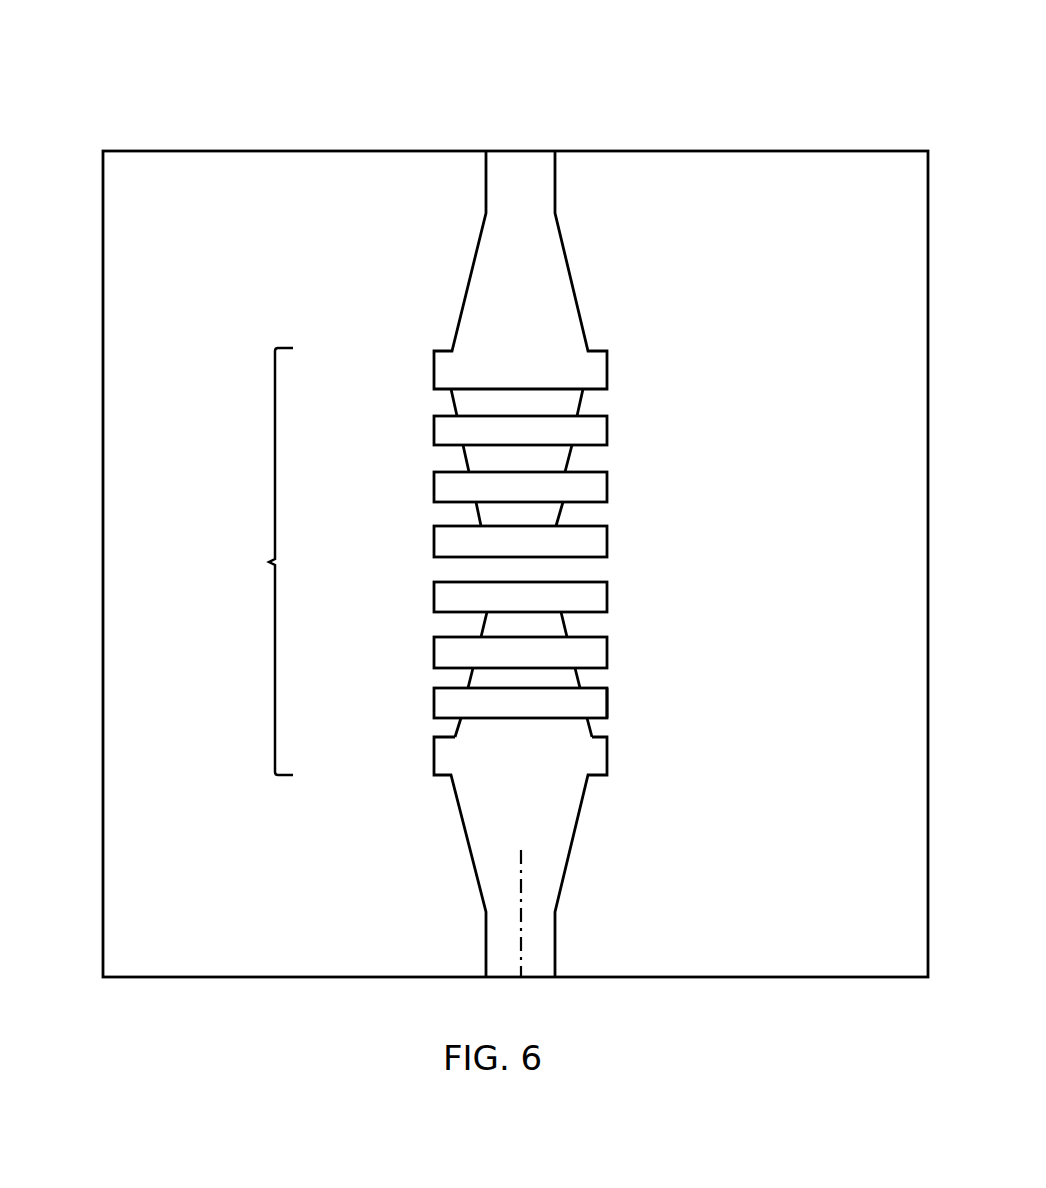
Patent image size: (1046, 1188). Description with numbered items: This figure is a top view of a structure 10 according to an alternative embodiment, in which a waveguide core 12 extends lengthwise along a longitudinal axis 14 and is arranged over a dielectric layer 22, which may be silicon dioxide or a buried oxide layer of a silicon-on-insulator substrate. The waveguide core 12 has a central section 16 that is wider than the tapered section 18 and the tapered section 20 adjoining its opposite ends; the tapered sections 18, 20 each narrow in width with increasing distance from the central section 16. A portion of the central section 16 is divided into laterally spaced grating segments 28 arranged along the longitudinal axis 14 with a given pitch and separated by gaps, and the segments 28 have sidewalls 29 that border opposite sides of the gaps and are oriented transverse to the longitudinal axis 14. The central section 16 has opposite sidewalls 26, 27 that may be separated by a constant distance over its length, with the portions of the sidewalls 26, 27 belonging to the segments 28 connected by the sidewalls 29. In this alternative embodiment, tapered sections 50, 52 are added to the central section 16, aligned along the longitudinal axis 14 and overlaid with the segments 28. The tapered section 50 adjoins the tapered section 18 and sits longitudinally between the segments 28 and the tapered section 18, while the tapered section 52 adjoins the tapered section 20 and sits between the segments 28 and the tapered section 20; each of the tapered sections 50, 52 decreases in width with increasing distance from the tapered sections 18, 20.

The structure 10 is at (157, 108).
The waveguide core 12 is at (327, 315).
The longitudinal axis 14 is at (522, 911).
The central section 16 is at (269, 562).
The tapered section 18 is at (542, 302).
The tapered section 20 is at (553, 823).
The dielectric layer 22 is at (190, 945).
The sidewall 26 is at (433, 698).
The sidewall 27 is at (610, 700).
The segments 28 is at (578, 550).
The sidewalls 29 is at (473, 527).
The tapered section 50 is at (533, 460).
The tapered section 52 is at (542, 675).